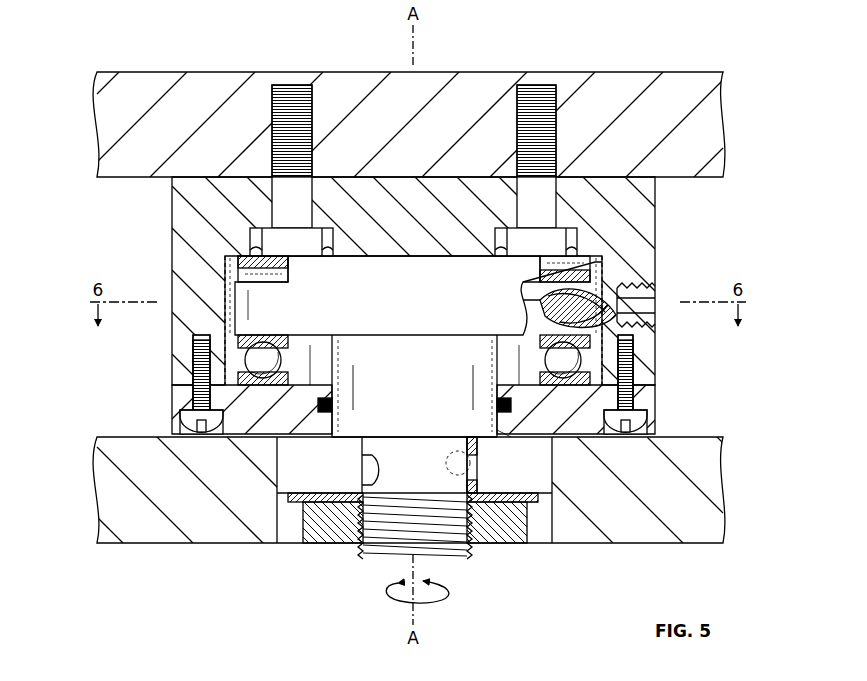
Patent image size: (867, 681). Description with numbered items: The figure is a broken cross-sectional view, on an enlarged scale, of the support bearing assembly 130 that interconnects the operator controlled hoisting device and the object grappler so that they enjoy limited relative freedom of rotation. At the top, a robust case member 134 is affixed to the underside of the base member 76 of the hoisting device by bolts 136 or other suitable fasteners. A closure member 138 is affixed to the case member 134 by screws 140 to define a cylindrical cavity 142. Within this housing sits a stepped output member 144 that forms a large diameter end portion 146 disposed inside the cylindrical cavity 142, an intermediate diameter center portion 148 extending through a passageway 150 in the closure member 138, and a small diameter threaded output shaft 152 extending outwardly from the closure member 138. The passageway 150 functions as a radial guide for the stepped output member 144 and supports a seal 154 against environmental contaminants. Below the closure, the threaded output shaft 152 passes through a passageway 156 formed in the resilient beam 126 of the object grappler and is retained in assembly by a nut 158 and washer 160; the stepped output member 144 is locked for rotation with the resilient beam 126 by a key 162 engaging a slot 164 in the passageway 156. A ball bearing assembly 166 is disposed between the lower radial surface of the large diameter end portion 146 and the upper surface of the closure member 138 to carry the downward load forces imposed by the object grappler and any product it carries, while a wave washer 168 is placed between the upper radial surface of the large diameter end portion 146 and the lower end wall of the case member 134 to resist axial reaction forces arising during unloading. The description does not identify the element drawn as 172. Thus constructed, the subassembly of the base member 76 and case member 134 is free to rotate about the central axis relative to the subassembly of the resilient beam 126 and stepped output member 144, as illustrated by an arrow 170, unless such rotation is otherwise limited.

The base member 76 is at (140, 85).
The bolts 136 is at (272, 116).
The case member 134 is at (640, 220).
The support bearing assembly 130 is at (170, 234).
The wave washer 168 is at (245, 278).
The worm gear 172 is at (620, 289).
The large diameter end portion 146 is at (378, 312).
The intermediate diameter center portion 148 is at (455, 365).
The ball bearing assembly 166 is at (262, 360).
The screws 140 is at (193, 375).
The closure member 138 is at (645, 400).
The stepped output member 144 is at (376, 556).
The seal 154 is at (334, 405).
The cylindrical cavity 142 is at (317, 372).
The passageway 156 is at (369, 471).
The key 162 is at (462, 473).
The resilient beam 126 is at (182, 508).
The washer 160 is at (297, 503).
The nut 158 is at (338, 528).
The threaded output shaft 152 is at (444, 543).
The slot 164 is at (494, 496).
The passageway 150 is at (493, 437).
The arrow 170 is at (437, 598).